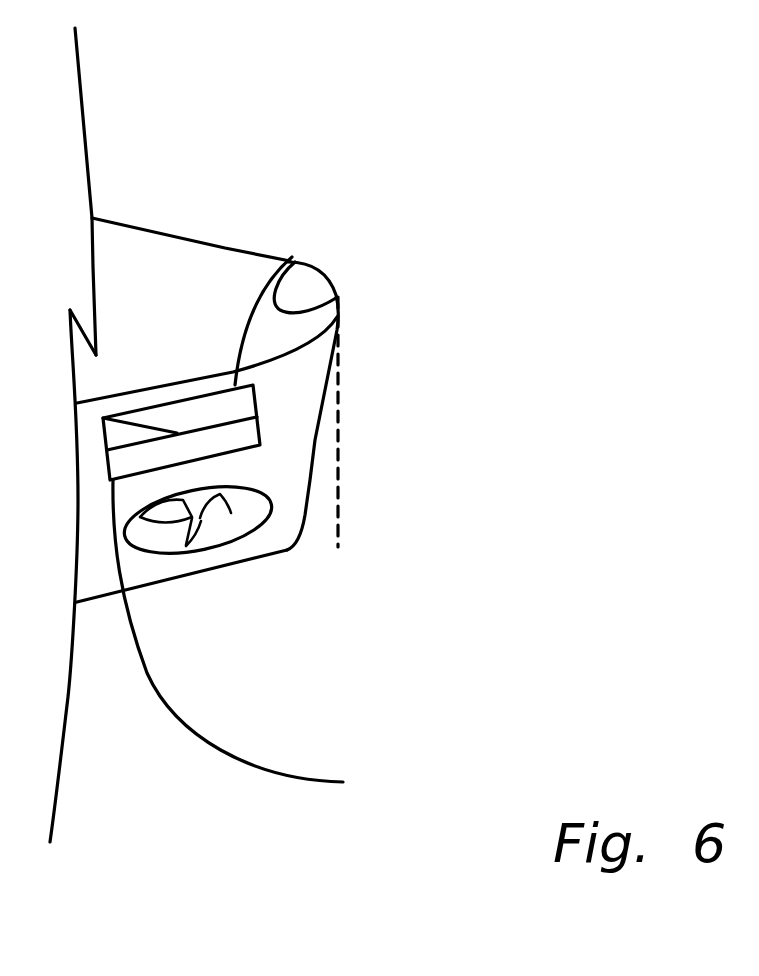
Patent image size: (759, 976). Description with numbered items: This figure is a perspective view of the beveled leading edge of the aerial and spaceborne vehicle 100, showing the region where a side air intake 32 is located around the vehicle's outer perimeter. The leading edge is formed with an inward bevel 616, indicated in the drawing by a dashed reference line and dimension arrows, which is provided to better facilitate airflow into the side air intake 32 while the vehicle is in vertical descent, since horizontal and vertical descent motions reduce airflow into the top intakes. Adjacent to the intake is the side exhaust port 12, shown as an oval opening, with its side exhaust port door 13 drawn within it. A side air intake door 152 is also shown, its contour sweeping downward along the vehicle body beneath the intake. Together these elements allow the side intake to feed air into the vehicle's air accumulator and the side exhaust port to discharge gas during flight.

The vehicle 100 is at (230, 207).
The side air intake 32 is at (292, 257).
The inward bevel 616 is at (240, 465).
The side exhaust port 12 is at (260, 518).
The side exhaust port door 13 is at (203, 513).
The side air intake door 152 is at (257, 639).